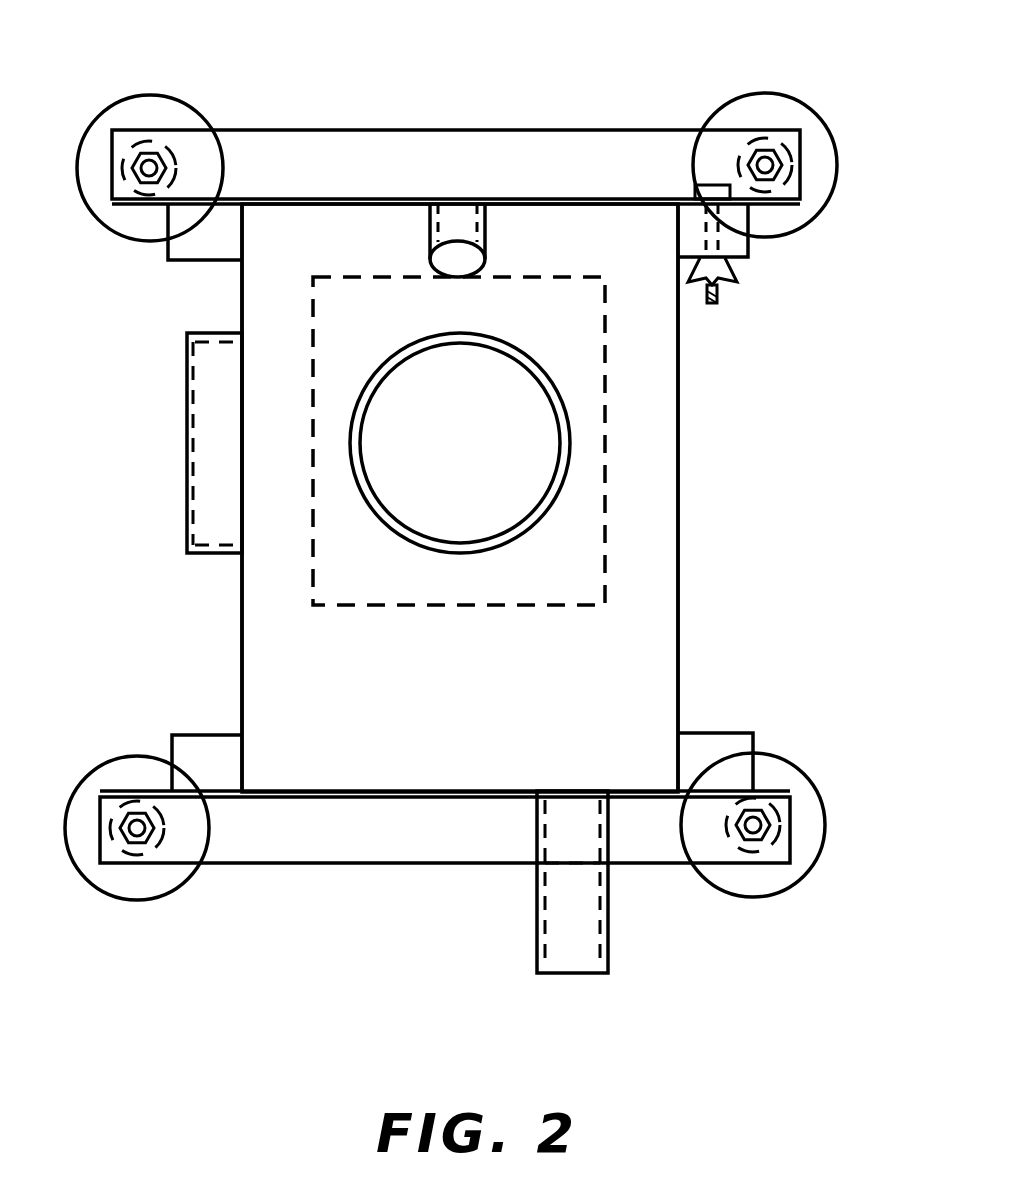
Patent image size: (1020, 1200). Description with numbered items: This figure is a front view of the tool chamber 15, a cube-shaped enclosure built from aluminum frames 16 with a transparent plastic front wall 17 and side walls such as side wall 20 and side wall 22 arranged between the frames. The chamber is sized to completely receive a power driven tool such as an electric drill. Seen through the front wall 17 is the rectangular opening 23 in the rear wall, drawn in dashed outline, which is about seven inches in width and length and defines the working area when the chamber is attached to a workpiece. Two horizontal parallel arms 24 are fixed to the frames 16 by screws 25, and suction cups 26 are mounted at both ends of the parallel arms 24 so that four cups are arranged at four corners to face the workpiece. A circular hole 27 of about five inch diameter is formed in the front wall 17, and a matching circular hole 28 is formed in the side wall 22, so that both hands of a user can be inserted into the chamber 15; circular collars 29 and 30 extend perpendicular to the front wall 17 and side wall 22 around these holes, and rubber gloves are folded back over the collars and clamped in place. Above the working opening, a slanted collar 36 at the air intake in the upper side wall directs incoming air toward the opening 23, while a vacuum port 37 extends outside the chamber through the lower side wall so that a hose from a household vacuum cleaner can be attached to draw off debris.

The tool chamber 15 is at (602, 70).
The aluminum frames 16 is at (738, 248).
The front wall 17 is at (642, 643).
The side wall 20 is at (678, 552).
The side wall 22 is at (242, 660).
The rectangular opening 23 is at (350, 298).
The parallel arms 24 is at (293, 150).
The screws 25 is at (712, 303).
The suction cups 26 is at (123, 223).
The circular hole 27 is at (475, 370).
The circular hole 28 is at (242, 462).
The circular collar 29 is at (530, 525).
The circular collar 30 is at (210, 333).
The slanted collar 36 is at (470, 230).
The vacuum port 37 is at (536, 932).